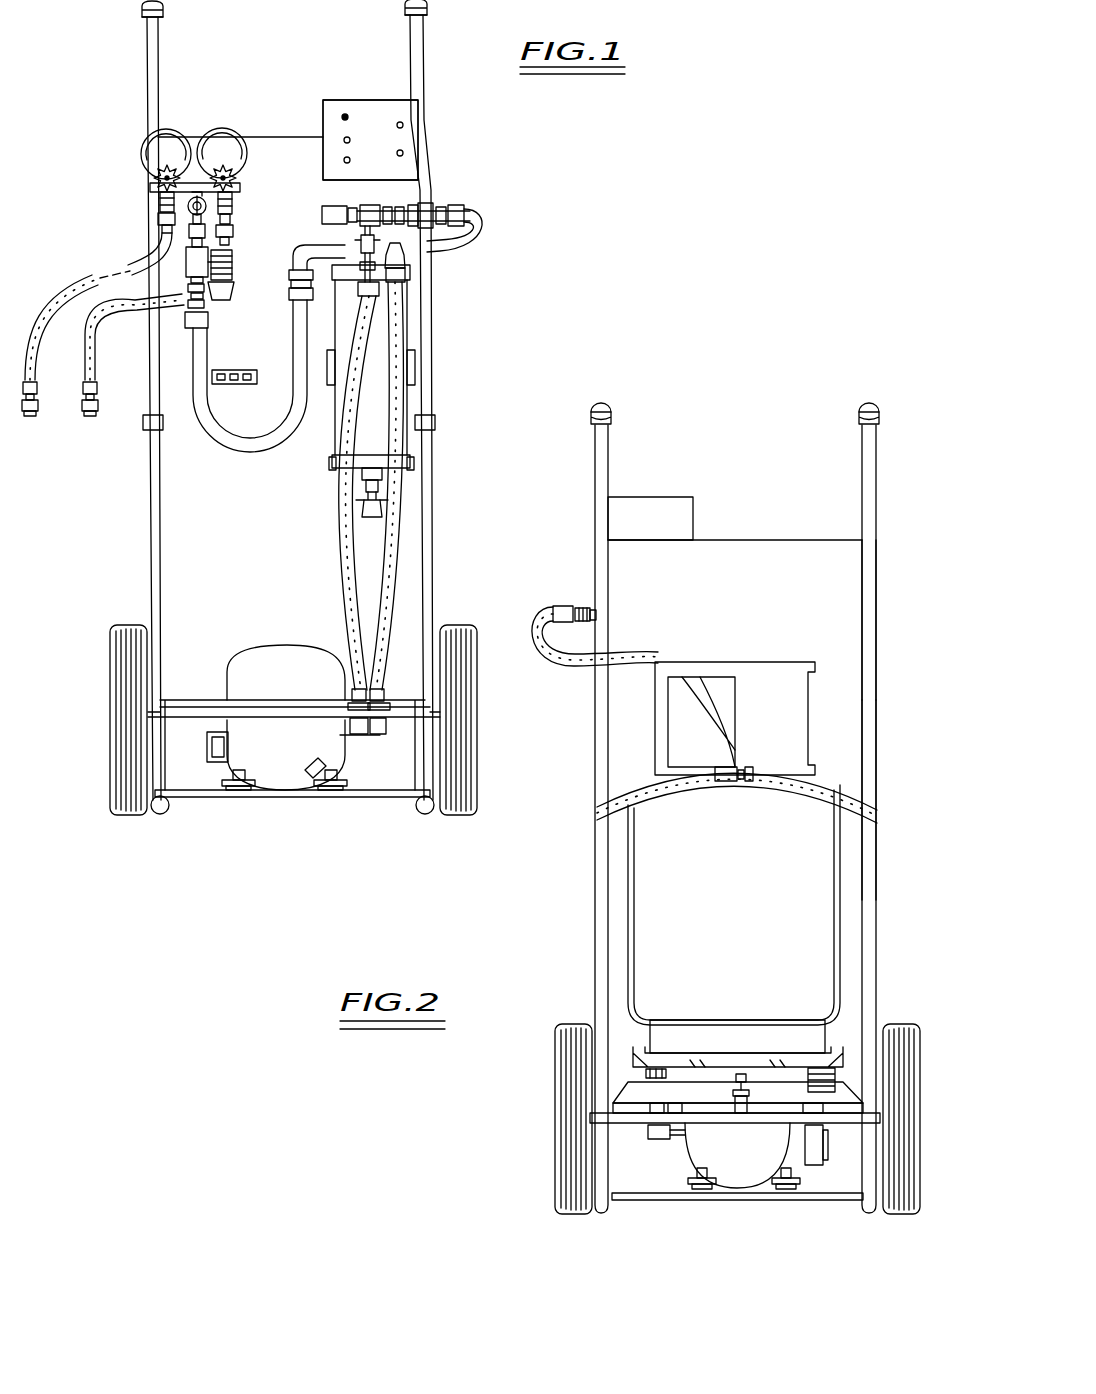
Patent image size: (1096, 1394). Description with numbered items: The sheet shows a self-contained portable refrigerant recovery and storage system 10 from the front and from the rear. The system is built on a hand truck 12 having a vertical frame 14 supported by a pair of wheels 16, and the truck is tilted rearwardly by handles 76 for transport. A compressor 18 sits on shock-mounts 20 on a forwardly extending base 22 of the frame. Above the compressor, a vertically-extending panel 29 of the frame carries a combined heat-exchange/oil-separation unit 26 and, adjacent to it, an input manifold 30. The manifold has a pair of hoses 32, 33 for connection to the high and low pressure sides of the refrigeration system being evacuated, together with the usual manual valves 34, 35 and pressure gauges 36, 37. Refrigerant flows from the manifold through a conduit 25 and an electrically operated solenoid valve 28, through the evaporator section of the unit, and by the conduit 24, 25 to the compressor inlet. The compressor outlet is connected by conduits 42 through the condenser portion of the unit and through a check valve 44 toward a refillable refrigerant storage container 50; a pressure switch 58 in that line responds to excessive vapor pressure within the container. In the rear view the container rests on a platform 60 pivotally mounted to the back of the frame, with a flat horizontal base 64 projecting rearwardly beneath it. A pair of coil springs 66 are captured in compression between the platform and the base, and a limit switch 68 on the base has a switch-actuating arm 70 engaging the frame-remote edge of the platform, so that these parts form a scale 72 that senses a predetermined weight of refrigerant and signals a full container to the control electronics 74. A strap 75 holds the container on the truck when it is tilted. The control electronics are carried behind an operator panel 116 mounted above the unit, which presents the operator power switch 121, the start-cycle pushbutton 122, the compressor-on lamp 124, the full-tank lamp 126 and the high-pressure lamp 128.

In FIG. 1, the refrigerant recovery and storage system 10 is at (494, 189).
In FIG. 2, the refrigerant recovery and storage system 10 is at (783, 363).
In FIG. 1, the hand truck 12 is at (433, 380).
In FIG. 2, the hand truck 12 is at (880, 676).
In FIG. 1, the vertical frame 14 is at (428, 505).
In FIG. 2, the vertical frame 14 is at (878, 770).
In FIG. 1, the wheels 16 is at (118, 625).
In FIG. 2, the wheels 16 is at (556, 1157).
In FIG. 1, the compressor 18 is at (275, 645).
In FIG. 2, the compressor 18 is at (692, 1158).
In FIG. 1, the shock-mounts 20 is at (325, 793).
In FIG. 2, the shock-mounts 20 is at (790, 1193).
In FIG. 1, the base 22 is at (410, 797).
In FIG. 2, the base 22 is at (845, 1197).
In FIG. 1, the conduit 24 is at (342, 505).
In FIG. 1, the conduit 25 is at (233, 438).
In FIG. 1, the heat-exchange/oil-separation unit 26 is at (404, 321).
In FIG. 1, the solenoid valve 28 is at (235, 268).
In FIG. 1, the panel 29 is at (168, 508).
In FIG. 2, the panel 29 is at (852, 608).
In FIG. 1, the input manifold 30 is at (160, 193).
In FIG. 1, the hose 32 is at (84, 279).
In FIG. 1, the hose 33 is at (97, 365).
In FIG. 1, the manual valve 34 is at (152, 176).
In FIG. 1, the manual valve 35 is at (237, 181).
In FIG. 1, the pressure gauge 36 is at (172, 135).
In FIG. 1, the pressure gauge 37 is at (228, 132).
In FIG. 1, the conduits 42 is at (433, 293).
In FIG. 2, the conduits 42 is at (588, 672).
In FIG. 1, the check valve 44 is at (362, 245).
In FIG. 2, the check valve 44 is at (668, 1140).
In FIG. 2, the refrigerant storage container 50 is at (630, 895).
In FIG. 1, the pressure switch 58 is at (331, 206).
In FIG. 2, the platform 60 is at (646, 1051).
In FIG. 2, the base 64 is at (630, 1093).
In FIG. 2, the coil springs 66 is at (837, 1066).
In FIG. 2, the limit switch 68 is at (744, 1093).
In FIG. 2, the switch-actuating arm 70 is at (741, 1070).
In FIG. 2, the scale 72 is at (686, 1041).
In FIG. 1, the control electronics 74 is at (396, 73).
In FIG. 2, the control electronics 74 is at (696, 496).
In FIG. 2, the strap 75 is at (628, 793).
In FIG. 1, the handles 76 is at (158, 42).
In FIG. 2, the handles 76 is at (608, 442).
In FIG. 1, the operator panel 116 is at (410, 106).
In FIG. 1, the operator power switch 121 is at (345, 113).
In FIG. 1, the operator start-cycle pushbutton 122 is at (345, 137).
In FIG. 1, the compressor-on lamp 124 is at (343, 160).
In FIG. 1, the full-tank lamp 126 is at (404, 125).
In FIG. 1, the high-pressure lamp 128 is at (404, 153).